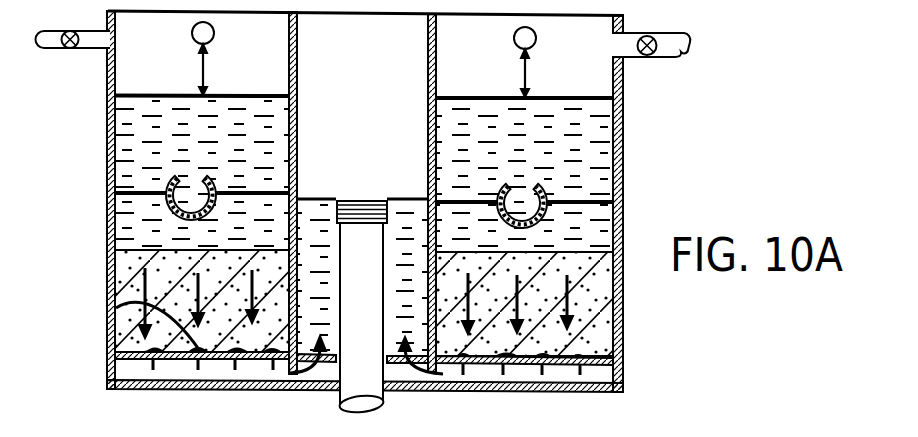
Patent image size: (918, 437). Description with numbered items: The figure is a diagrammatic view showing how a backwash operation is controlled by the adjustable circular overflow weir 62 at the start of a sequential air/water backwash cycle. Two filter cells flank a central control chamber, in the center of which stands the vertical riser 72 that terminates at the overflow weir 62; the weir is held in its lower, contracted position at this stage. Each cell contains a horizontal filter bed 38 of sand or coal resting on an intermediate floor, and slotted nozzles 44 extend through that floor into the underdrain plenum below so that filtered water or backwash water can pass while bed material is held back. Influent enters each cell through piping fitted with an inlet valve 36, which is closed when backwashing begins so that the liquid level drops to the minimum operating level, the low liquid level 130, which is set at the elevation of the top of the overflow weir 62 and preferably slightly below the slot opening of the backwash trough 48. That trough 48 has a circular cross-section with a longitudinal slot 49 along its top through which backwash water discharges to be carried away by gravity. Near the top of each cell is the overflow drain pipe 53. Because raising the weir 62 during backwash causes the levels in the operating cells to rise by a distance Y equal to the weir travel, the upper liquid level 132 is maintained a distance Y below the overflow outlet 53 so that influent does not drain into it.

The inlet valve 36 is at (72, 50).
The filter bed 38 is at (125, 283).
The slotted nozzle 44 is at (118, 308).
The backwash trough 48 is at (171, 184).
The longitudinal slot 49 is at (192, 184).
The overflow drain pipe 53 is at (194, 37).
The overflow weir 62 is at (391, 202).
The vertical riser 72 is at (346, 298).
The low liquid level 130 is at (267, 193).
The upper liquid level 132 is at (222, 94).